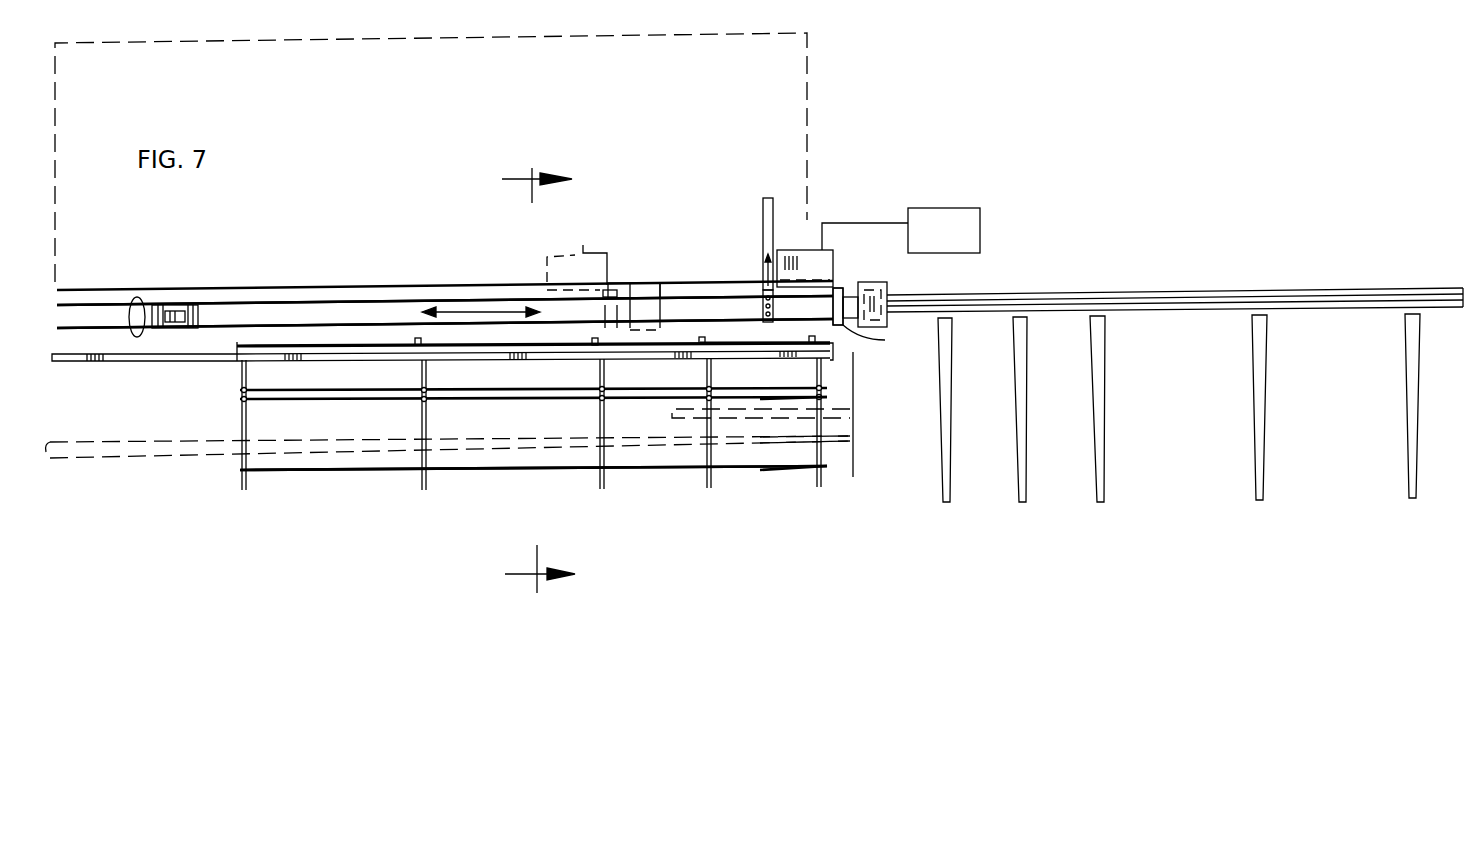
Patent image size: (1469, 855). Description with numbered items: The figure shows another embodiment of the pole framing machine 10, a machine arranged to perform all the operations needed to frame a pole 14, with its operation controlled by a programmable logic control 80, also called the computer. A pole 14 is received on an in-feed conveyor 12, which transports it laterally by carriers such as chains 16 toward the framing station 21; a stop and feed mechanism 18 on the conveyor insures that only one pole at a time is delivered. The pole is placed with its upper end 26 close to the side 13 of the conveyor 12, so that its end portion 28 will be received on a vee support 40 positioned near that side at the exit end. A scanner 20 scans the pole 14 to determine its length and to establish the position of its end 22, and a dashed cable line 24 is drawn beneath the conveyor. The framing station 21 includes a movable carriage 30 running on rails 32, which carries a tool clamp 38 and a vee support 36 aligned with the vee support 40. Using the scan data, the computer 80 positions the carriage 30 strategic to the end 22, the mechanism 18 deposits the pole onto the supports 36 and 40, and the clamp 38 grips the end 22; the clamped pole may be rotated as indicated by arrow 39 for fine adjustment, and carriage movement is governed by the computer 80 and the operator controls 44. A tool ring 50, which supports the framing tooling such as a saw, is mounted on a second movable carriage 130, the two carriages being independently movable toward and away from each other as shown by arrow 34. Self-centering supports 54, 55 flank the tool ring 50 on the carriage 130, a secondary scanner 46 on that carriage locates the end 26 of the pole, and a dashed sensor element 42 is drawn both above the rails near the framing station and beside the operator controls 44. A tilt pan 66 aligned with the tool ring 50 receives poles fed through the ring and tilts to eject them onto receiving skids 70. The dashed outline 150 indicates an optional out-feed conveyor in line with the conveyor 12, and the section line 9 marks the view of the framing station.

The section line 9- 9 is at (538, 378).
The pole framing machine 10 is at (488, 527).
The in-feed conveyor 12 is at (567, 470).
The side of conveyor 13 is at (855, 365).
The pole 14 is at (470, 452).
The chains 16 is at (422, 420).
The stop and feed mechanism 18 is at (722, 340).
The scanner 20 is at (115, 362).
The framing station 21 is at (413, 272).
The end of pole 22 is at (50, 458).
The cable 24 is at (127, 458).
The upper end of pole 26 is at (853, 412).
The end portion of pole 28 is at (833, 400).
The movable carriage 30 is at (178, 308).
The rails 32 is at (313, 322).
The arrow 34 is at (473, 310).
The vee support 36 is at (190, 330).
The tool clamp 38 is at (163, 330).
The arrow 39 is at (130, 300).
The vee support 40 is at (763, 305).
The sensor 42 is at (585, 250).
The operator controls 44 is at (820, 270).
The secondary scanner 46 is at (615, 275).
The tool ring 50 is at (642, 278).
The self-centering support 54 is at (847, 302).
The self-centering support 55 is at (893, 293).
The tilt pan 66 is at (1158, 292).
The receiving skids 70 is at (1105, 455).
The programmable logic control 80 is at (958, 244).
The movable carriage 130 is at (845, 297).
The out feed conveyor 150 is at (807, 84).